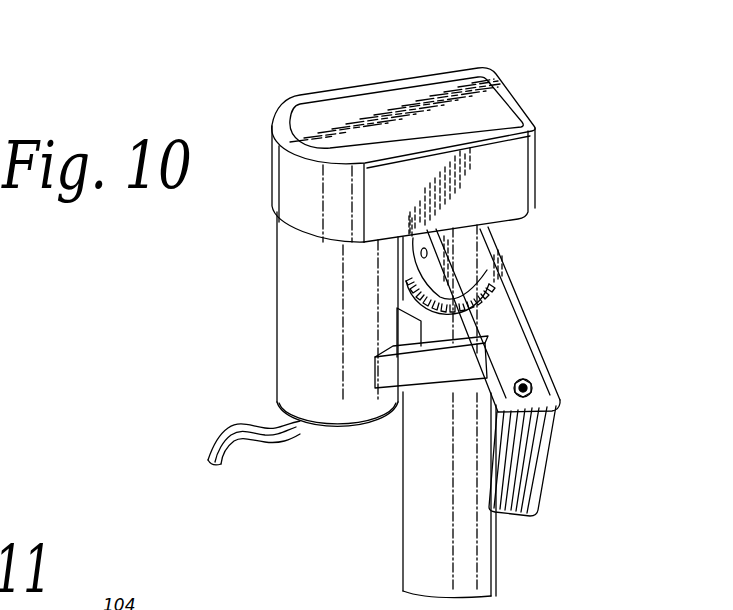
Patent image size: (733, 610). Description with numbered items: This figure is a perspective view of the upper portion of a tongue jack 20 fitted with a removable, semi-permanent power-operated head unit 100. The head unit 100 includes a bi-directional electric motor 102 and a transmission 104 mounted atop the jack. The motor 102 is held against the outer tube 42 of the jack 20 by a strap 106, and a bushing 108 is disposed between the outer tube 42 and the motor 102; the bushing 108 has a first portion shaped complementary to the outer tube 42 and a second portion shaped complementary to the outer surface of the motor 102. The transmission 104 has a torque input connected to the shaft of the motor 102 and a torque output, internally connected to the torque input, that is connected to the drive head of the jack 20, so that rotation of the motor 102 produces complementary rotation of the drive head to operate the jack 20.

The power-operated head unit 100 is at (205, 101).
The transmission 104 is at (412, 90).
The bi-directional electric motor 102 is at (287, 276).
The strap 106 is at (383, 378).
The bushing 108 is at (410, 328).
The outer tube 42 is at (403, 480).
The tongue jack 20 is at (372, 555).